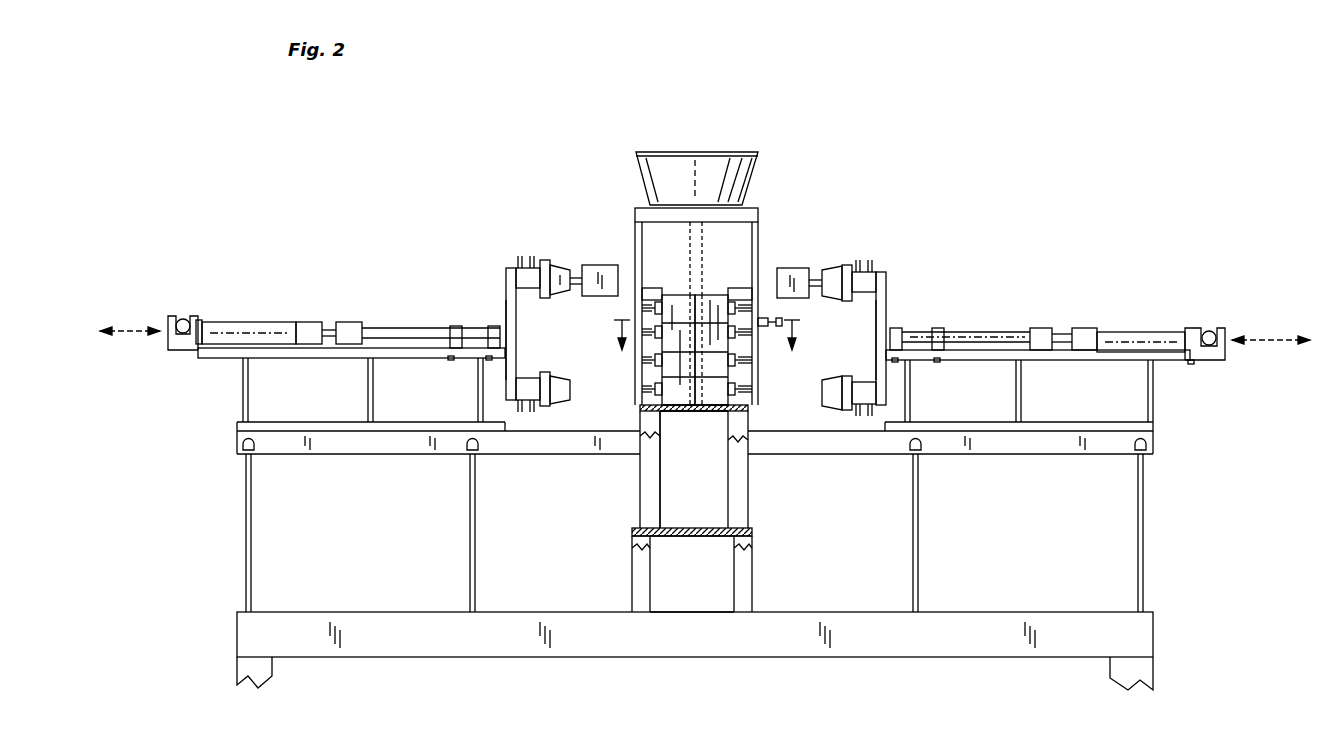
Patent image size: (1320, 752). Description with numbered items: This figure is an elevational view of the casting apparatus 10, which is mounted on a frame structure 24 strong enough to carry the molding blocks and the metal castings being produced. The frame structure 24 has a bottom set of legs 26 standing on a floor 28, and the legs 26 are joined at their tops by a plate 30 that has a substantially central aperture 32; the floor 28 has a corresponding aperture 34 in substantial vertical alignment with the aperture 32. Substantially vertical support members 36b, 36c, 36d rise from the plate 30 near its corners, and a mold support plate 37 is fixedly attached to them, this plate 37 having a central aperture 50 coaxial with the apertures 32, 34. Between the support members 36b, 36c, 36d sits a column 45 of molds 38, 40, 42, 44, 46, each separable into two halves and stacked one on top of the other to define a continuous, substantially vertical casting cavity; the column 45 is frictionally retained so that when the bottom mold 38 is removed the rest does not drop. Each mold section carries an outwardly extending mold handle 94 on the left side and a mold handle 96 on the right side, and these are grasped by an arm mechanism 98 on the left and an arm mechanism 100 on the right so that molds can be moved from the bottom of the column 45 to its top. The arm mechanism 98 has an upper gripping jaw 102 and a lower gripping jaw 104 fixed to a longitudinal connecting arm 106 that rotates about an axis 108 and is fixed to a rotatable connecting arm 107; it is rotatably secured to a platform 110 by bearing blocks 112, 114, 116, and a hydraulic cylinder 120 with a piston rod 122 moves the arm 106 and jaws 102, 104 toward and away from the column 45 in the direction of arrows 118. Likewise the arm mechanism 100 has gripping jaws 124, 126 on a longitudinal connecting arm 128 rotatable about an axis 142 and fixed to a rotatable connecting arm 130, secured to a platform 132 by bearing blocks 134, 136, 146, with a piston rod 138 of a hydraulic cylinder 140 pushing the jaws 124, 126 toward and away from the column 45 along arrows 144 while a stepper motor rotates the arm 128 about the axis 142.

The apparatus 10 is at (862, 218).
The frame structure 24 is at (757, 571).
The legs 26 is at (634, 570).
The floor 28 is at (856, 612).
The plate 30 is at (665, 526).
The aperture 32 is at (686, 538).
The aperture 34 is at (700, 612).
The support member 36b is at (740, 468).
The support member 36c is at (748, 430).
The support member 36d is at (640, 418).
The mold support plate 37 is at (716, 414).
The mold 38 is at (718, 400).
The mold 40 is at (718, 374).
The mold 42 is at (712, 330).
The mold 44 is at (715, 290).
The column 45 is at (674, 288).
The mold 46 is at (597, 262).
The aperture 50 is at (684, 414).
The mold handle 94 is at (642, 390).
The mold handle 96 is at (748, 396).
The arm mechanism 98 is at (331, 352).
The arm mechanism 100 is at (1055, 354).
The upper gripping jaw 102 is at (528, 266).
The lower gripping jaw 104 is at (562, 408).
The longitudinal connecting arm 106 is at (517, 338).
The rotatable connecting arm 107 is at (404, 328).
The axis 108 is at (512, 338).
The platform 110 is at (396, 358).
The bearing block 112 is at (190, 340).
The bearing block 114 is at (454, 346).
The bearing block 116 is at (494, 348).
The arrows 118 is at (120, 334).
The hydraulic cylinder 120 is at (226, 330).
The piston rod 122 is at (330, 326).
The gripping jaw 124 is at (850, 264).
The gripping jaw 126 is at (838, 412).
The longitudinal connecting arm 128 is at (871, 339).
The rotatable connecting arm 130 is at (964, 330).
The platform 132 is at (980, 362).
The bearing block 134 is at (898, 345).
The bearing block 136 is at (940, 345).
The piston rod 138 is at (1058, 326).
The hydraulic cylinder 140 is at (1118, 328).
The axis 142 is at (874, 332).
The arrows 144 is at (1282, 332).
The bearing block 146 is at (1192, 326).